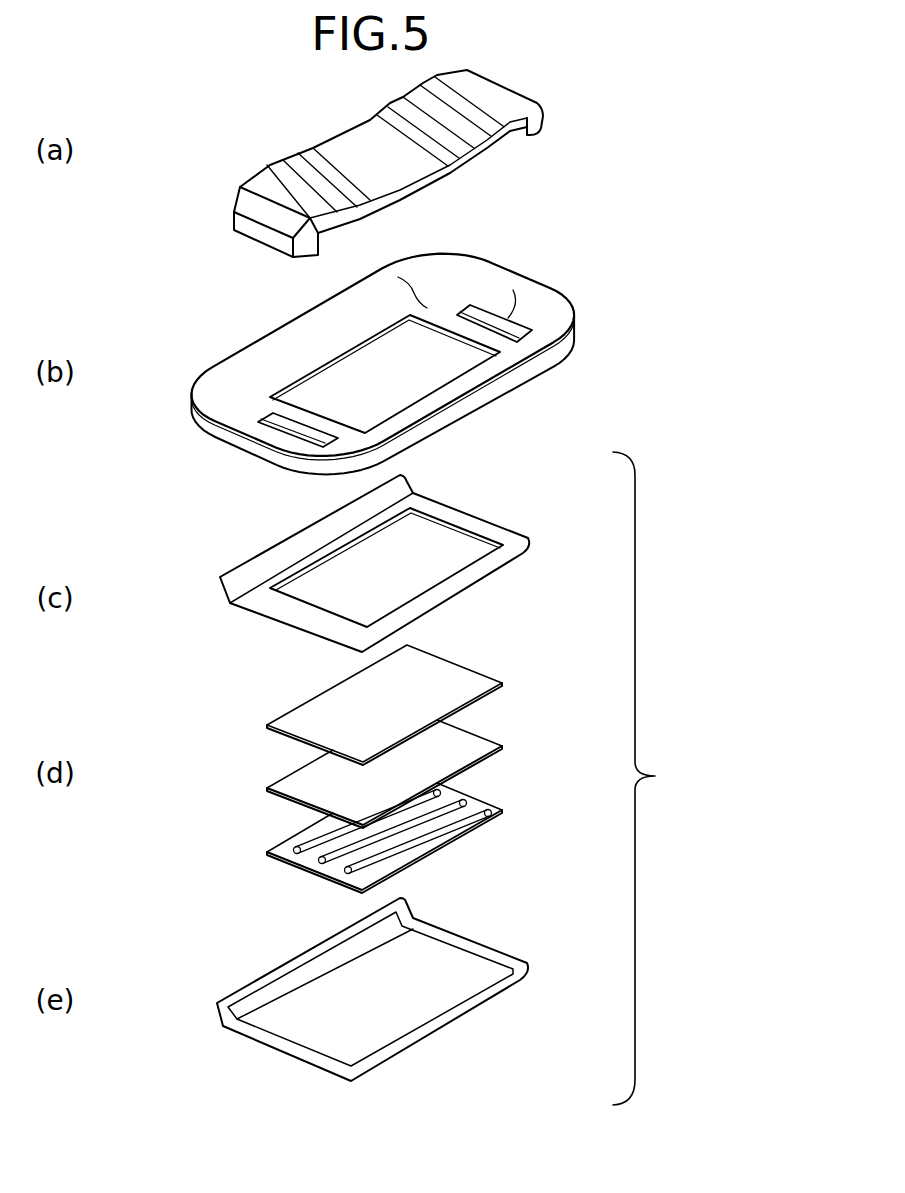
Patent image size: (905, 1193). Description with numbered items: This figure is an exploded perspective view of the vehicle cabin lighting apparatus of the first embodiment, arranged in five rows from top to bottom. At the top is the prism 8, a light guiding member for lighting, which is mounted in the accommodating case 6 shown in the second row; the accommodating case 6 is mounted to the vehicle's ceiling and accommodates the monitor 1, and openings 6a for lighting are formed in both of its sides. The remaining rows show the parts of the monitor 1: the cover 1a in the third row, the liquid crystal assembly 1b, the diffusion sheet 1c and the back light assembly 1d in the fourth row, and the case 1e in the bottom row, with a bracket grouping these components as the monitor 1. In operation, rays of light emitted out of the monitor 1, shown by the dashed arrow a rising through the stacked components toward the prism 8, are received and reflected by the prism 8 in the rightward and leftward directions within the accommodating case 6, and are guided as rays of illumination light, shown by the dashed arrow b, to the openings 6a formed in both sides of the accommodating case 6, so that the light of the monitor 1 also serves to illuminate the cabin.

The monitor 1 is at (649, 778).
The cover 1a is at (485, 520).
The liquid crystal assembly 1b is at (470, 667).
The diffusion sheet 1c is at (488, 738).
The back light assembly 1d is at (487, 803).
The case 1e is at (478, 943).
The accommodating case 6 is at (533, 374).
The openings 6a is at (487, 321).
The prism 8 is at (499, 150).
The arrows showing rays of light emitted out of the monitor a is at (343, 178).
The arrows showing rays of illumination light b is at (263, 272).